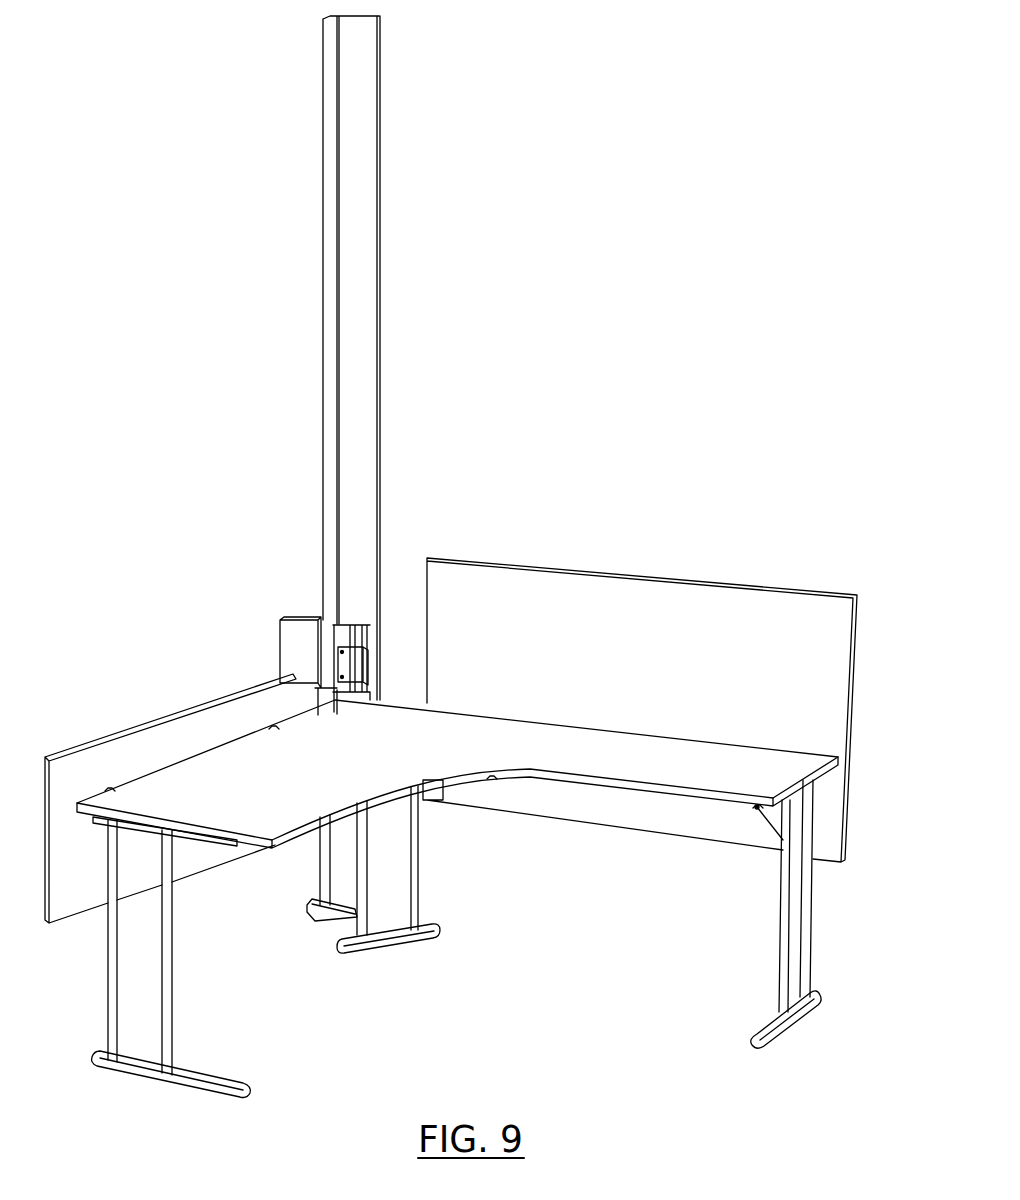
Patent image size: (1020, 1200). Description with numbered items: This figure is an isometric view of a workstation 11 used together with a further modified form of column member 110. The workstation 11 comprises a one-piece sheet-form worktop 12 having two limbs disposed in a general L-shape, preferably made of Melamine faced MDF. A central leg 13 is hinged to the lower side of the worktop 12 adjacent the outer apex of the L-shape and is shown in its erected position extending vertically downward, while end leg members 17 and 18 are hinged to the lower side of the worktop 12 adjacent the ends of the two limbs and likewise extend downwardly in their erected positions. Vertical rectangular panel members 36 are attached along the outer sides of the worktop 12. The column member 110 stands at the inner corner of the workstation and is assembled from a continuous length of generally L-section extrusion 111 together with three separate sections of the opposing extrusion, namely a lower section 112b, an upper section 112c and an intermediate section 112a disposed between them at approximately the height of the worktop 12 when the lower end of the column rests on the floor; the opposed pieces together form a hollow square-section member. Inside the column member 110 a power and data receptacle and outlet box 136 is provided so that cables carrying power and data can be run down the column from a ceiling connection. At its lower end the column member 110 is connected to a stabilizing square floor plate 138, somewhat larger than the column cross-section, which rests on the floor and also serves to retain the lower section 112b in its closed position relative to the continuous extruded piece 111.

The workstation 11 is at (573, 851).
The worktop 12 is at (793, 762).
The central leg 13 is at (400, 888).
The end leg member 17 is at (158, 1000).
The end leg member 18 is at (785, 955).
The panel member 36 is at (135, 740).
The column member 110 is at (345, 480).
The L-section extrusion 111 is at (378, 140).
The intermediate section 112a is at (286, 640).
The lower section 112b is at (343, 861).
The upper section 112c is at (387, 358).
The power and data receptacle and outlet box 136 is at (368, 650).
The stabilizing square floor plate 138 is at (313, 907).